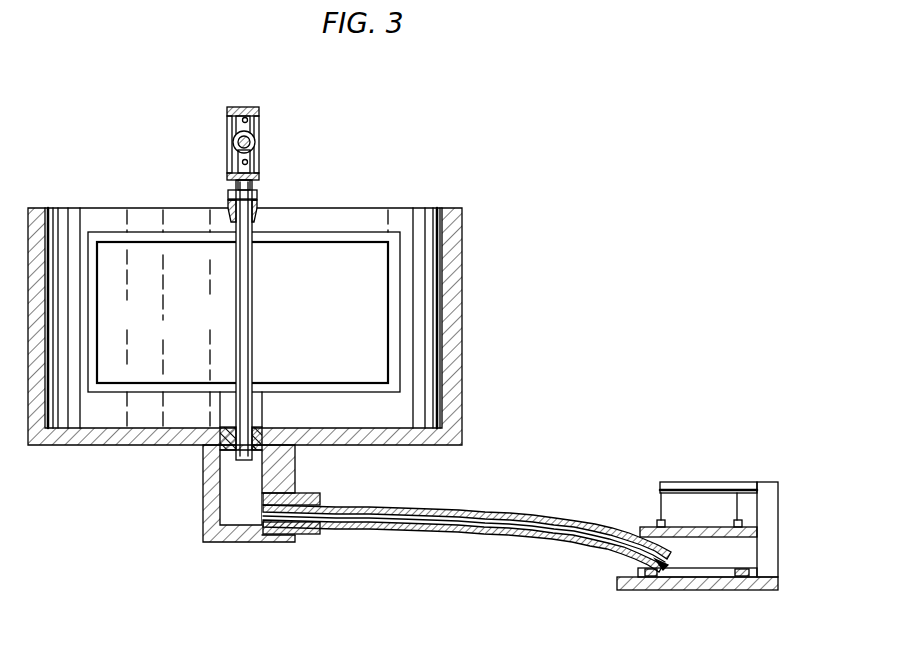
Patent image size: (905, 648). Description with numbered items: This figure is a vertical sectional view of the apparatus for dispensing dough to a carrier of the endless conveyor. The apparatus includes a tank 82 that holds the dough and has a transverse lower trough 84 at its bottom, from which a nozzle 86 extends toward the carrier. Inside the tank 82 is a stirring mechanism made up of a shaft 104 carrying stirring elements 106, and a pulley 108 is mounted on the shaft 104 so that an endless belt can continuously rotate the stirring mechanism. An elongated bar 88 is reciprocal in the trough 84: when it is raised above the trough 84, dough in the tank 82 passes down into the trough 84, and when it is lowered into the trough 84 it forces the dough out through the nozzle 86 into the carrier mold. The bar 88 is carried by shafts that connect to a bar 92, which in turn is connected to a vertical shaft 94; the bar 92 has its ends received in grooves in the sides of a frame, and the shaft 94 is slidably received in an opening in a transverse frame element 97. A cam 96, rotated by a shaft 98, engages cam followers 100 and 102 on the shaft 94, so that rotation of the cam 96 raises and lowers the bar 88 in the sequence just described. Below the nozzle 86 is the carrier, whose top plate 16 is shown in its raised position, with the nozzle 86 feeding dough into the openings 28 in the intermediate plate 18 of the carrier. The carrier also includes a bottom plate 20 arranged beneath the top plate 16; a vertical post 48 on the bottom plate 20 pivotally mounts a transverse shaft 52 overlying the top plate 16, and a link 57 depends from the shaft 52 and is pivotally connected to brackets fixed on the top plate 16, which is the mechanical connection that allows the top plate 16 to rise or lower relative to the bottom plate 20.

The top plate 16 is at (647, 528).
The intermediate plate 18 is at (640, 568).
The bottom plate 20 is at (640, 588).
The openings 28 is at (733, 572).
The vertical post 48 is at (773, 538).
The transverse shaft 52 is at (730, 482).
The link 57 is at (658, 503).
The tank 82 is at (452, 285).
The lower trough 84 is at (230, 478).
The nozzle 86 is at (442, 505).
The elongated bar 88 is at (262, 423).
The bar 92 is at (258, 178).
The vertical shaft 94 is at (237, 128).
The cam 96 is at (257, 143).
The transverse frame element 97 is at (239, 107).
The shaft 98 is at (233, 142).
The cam follower 100 is at (253, 158).
The cam follower 102 is at (253, 120).
The shaft 104 is at (260, 328).
The stirring elements 106 is at (333, 242).
The pulley 108 is at (230, 193).